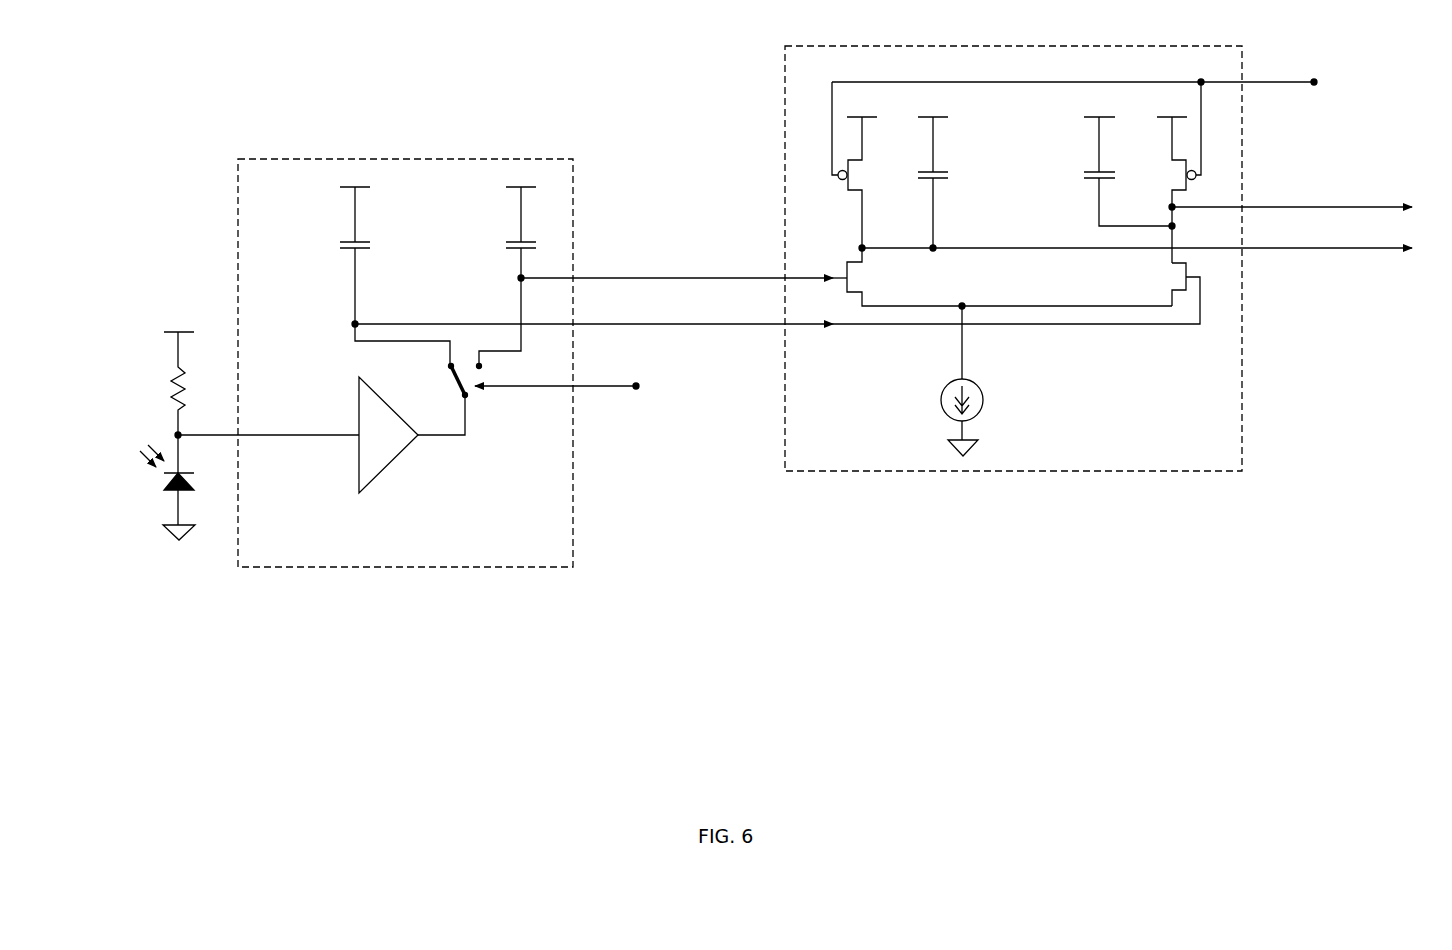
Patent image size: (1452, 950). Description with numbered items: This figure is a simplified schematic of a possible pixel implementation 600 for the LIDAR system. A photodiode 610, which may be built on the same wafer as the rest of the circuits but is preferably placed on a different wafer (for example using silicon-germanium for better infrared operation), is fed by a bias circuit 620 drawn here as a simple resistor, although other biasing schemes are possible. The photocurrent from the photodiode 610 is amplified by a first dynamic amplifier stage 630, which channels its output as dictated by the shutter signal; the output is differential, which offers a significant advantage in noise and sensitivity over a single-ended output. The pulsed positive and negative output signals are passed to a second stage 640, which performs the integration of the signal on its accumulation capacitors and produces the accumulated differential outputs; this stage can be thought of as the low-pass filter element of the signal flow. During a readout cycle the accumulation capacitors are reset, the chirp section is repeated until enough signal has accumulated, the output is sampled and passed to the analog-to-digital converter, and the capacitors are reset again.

The pixel circuit 600 is at (737, 370).
The photodiode 610 is at (137, 477).
The bias circuit 620 is at (167, 372).
The first dynamic amplifier stage 630 is at (452, 363).
The second stage 640 is at (1102, 258).